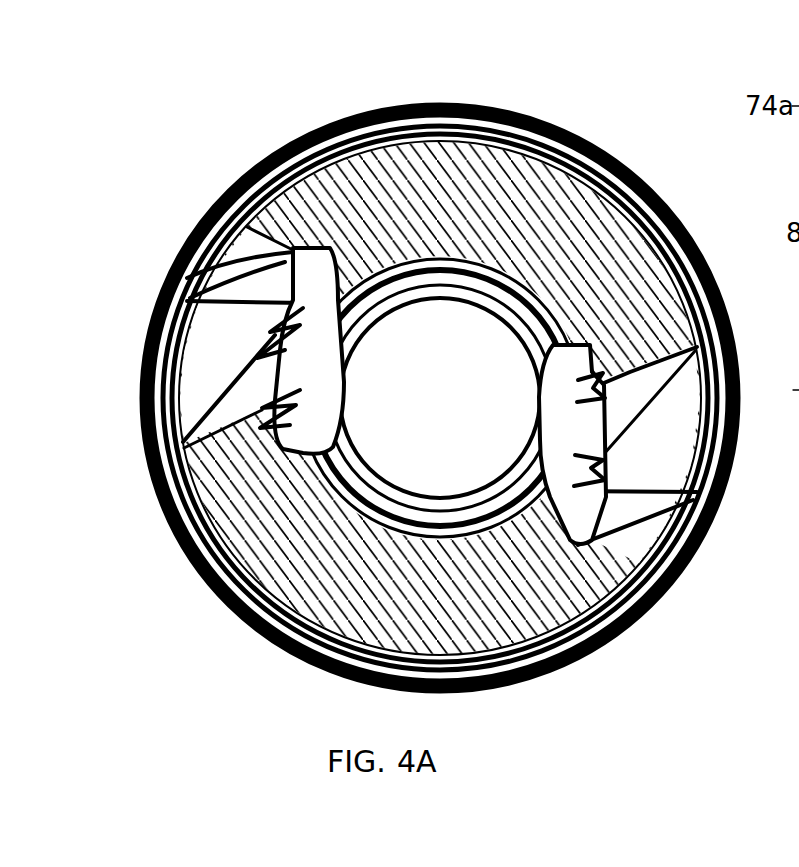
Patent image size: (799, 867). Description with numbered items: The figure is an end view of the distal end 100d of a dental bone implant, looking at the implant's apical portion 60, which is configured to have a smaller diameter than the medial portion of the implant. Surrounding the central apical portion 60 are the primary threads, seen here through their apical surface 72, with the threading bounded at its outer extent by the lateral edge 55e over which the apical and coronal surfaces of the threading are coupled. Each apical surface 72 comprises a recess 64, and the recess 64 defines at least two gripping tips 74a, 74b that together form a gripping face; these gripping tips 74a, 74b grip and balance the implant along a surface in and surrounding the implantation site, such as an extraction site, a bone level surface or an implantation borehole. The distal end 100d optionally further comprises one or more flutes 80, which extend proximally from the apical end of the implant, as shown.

The distal end 100d is at (280, 676).
The lateral edge 55e is at (292, 188).
The apical surface 72 is at (420, 192).
The gripping tip 74a is at (295, 252).
The gripping tip 74b is at (297, 255).
The flute 80 is at (288, 378).
The recess 64 is at (377, 280).
The apical portion 60 is at (378, 430).